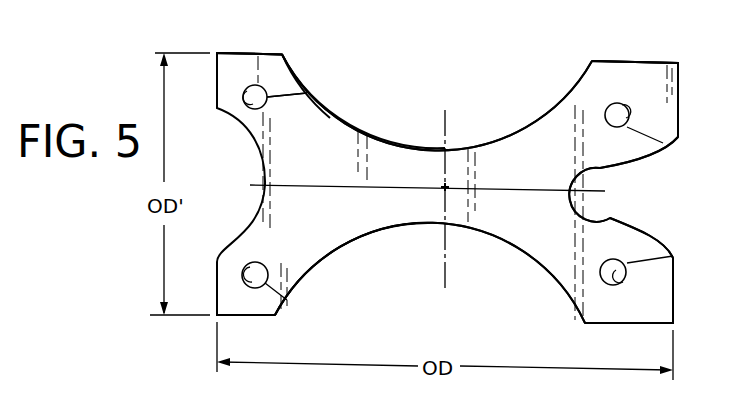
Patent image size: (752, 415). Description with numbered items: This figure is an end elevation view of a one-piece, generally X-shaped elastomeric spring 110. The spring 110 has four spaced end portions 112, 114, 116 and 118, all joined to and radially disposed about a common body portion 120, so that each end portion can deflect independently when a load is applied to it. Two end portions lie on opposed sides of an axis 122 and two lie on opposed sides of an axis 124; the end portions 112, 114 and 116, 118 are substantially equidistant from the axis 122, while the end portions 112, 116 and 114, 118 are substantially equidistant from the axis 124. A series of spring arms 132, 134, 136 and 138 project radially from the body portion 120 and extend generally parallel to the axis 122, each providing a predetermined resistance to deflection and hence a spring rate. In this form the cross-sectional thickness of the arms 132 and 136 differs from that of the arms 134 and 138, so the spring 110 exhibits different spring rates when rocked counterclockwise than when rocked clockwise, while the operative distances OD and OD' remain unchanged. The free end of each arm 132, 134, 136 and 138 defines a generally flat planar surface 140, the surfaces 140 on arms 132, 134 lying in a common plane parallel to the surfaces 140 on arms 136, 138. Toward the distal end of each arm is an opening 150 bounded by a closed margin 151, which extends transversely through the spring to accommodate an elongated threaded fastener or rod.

The elastomeric spring 110 is at (497, 87).
The end portion 112 is at (277, 70).
The end portion 114 is at (665, 84).
The end portion 116 is at (240, 308).
The end portion 118 is at (613, 318).
The body portion 120 is at (480, 228).
The axis 122 is at (447, 117).
The axis 124 is at (597, 188).
The spring arm 132 is at (292, 142).
The spring arm 134 is at (600, 143).
The spring arm 136 is at (300, 252).
The spring arm 138 is at (595, 247).
The planar surface 140 is at (247, 53).
The opening 150 is at (243, 97).
The closed margin 151 is at (267, 97).